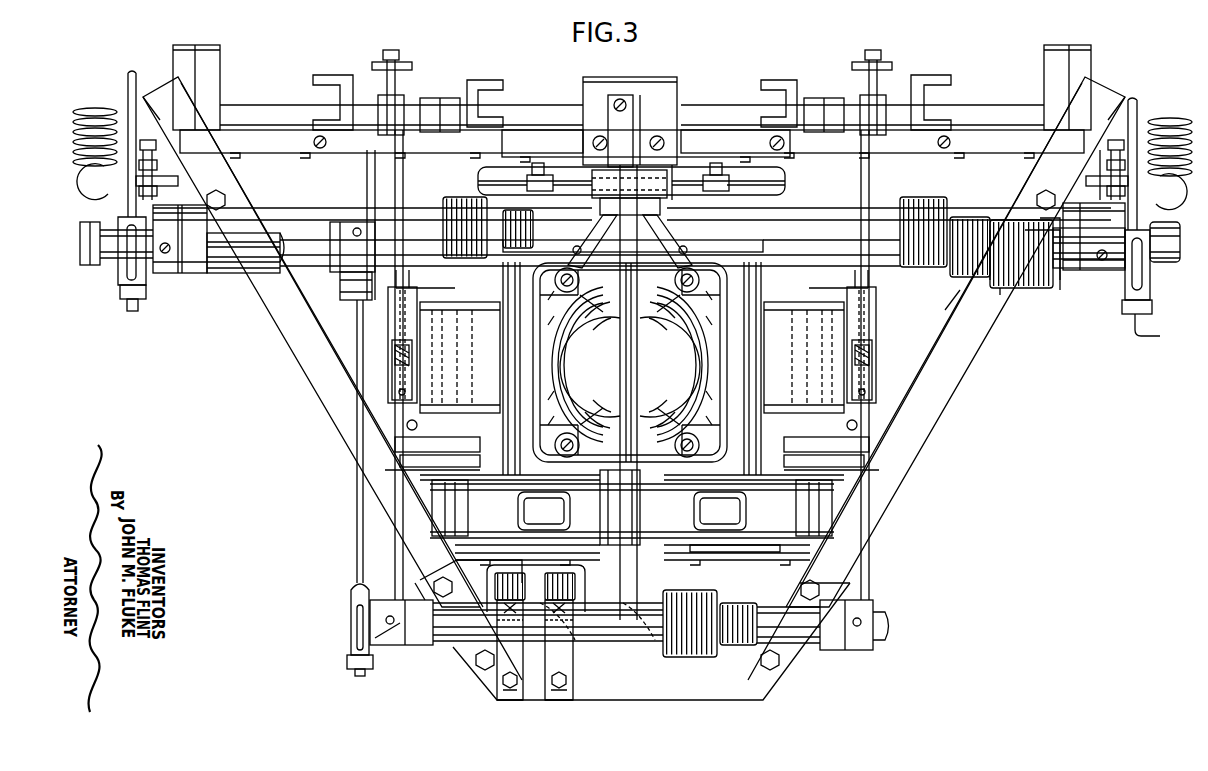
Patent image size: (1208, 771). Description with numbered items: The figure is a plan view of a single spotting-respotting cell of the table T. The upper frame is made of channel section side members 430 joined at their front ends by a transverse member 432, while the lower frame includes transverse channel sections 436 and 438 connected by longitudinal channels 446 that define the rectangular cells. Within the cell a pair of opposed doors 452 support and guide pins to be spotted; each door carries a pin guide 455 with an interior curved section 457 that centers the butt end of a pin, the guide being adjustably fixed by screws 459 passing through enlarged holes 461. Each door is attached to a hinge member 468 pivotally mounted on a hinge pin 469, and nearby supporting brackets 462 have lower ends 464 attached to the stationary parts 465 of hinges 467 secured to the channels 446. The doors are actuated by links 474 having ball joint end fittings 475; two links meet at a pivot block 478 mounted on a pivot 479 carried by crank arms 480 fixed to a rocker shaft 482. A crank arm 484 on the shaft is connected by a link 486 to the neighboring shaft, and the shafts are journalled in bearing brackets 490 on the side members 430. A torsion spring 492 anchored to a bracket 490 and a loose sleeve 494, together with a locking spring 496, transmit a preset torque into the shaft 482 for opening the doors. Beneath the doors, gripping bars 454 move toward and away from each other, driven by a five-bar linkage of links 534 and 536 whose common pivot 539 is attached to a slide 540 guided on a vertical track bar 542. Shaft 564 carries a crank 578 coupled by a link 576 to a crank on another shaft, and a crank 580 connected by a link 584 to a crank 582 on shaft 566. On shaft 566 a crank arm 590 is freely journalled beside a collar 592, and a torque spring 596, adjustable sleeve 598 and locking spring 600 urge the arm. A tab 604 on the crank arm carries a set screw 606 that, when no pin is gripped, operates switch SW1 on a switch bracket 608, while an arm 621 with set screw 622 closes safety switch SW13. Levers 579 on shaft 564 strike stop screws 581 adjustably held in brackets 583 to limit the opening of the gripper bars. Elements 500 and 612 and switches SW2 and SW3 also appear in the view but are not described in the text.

The channel section side member 430 is at (275, 318).
The transverse member 432 is at (752, 690).
The transverse channel section 436 is at (492, 548).
The transverse channel section 438 is at (280, 115).
The longitudinal channel 446 is at (629, 509).
The door 452 is at (775, 130).
The gripping bar 454 is at (438, 98).
The pin guide 455 is at (582, 369).
The interior curved section 457 is at (604, 335).
The screw 459 is at (750, 245).
The enlarged hole 461 is at (565, 240).
The supporting bracket 462 is at (435, 330).
The lower end of bracket 464 is at (400, 430).
The stationary hinge part 465 is at (400, 448).
The hinge 467 is at (400, 465).
The hinge member 468 is at (440, 478).
The hinge pin 469 is at (395, 292).
The link 474 is at (560, 170).
The ball joint end fitting 475 is at (527, 180).
The pivot block 478 is at (640, 90).
The pivot 479 is at (675, 170).
The crank arm 480 is at (592, 205).
The rocker shaft 482 is at (262, 235).
The crank arm 484 is at (1152, 288).
The link 486 is at (1135, 100).
The bearing bracket 490 is at (192, 250).
The torsion spring 492 is at (1040, 290).
The sleeve 494 is at (995, 295).
The locking spring 496 is at (975, 295).
The post 500 is at (650, 120).
The downwardly extending link 534 is at (430, 510).
The link 536 is at (335, 75).
The common pivot 539 is at (398, 60).
The slide 540 is at (600, 553).
The vertical track bar 542 is at (664, 553).
The shaft 564 is at (255, 230).
The shaft 566 is at (442, 640).
The link 576 is at (125, 78).
The crank 578 is at (132, 300).
The lever 579 is at (105, 258).
The crank 580 is at (340, 262).
The stop screw 581 is at (160, 95).
The crank 582 is at (358, 678).
The bracket 583 is at (188, 135).
The link 584 is at (356, 560).
The crank arm 590 is at (367, 170).
The collar 592 is at (790, 195).
The torque spring 596 is at (935, 200).
The adjustable sleeve 598 is at (960, 215).
The locking spring 600 is at (965, 225).
The tab 604 is at (635, 700).
The set screw 606 is at (612, 700).
The switch bracket 608 is at (560, 585).
The spring 612 is at (112, 110).
The arm 621 is at (572, 665).
The set screw 622 is at (572, 700).
The switch SW1 is at (620, 640).
The switch SW2 is at (398, 420).
The switch SW3 is at (862, 385).
The safety switch SW13 is at (595, 640).
The table T is at (1006, 358).